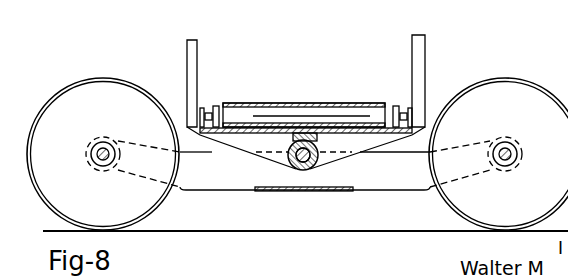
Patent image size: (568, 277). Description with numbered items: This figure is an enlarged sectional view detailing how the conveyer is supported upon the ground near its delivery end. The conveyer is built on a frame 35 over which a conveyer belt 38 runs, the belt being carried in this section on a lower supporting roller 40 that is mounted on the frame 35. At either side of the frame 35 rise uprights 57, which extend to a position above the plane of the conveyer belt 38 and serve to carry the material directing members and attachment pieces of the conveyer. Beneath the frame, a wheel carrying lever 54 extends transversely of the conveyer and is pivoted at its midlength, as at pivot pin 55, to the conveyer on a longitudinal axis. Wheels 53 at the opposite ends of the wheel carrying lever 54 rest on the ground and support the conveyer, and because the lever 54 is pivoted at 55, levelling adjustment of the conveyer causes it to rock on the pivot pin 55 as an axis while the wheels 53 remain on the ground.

The wheels 53 is at (108, 90).
The wheel carrying lever 54 is at (385, 185).
The pivot pin 55 is at (300, 170).
The frame 35 is at (419, 53).
The uprights 57 is at (197, 54).
The lower supporting rollers 40 is at (265, 113).
The conveyer belt 38 is at (343, 104).